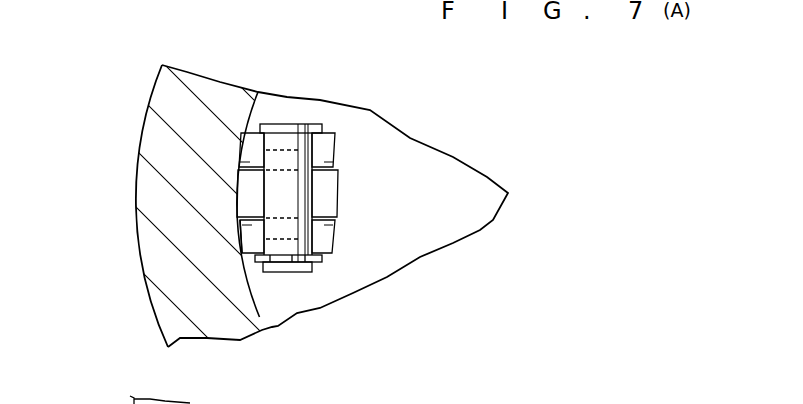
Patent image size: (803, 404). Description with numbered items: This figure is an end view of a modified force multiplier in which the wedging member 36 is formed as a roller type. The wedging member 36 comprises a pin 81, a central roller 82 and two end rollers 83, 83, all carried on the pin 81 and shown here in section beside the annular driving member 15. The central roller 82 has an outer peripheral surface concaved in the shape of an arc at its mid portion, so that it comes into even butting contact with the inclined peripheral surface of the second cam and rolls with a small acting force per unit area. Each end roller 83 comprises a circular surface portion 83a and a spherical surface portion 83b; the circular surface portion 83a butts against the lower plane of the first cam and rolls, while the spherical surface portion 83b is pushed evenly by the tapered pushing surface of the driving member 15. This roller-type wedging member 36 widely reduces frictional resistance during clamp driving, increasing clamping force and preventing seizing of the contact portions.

The driving member 15 is at (149, 108).
The wedging member 36 is at (355, 138).
The pin 81 is at (287, 270).
The central roller 82 is at (337, 192).
The end roller 83 is at (336, 150).
The circular surface portion 83a is at (240, 227).
The spherical surface portion 83b is at (255, 256).